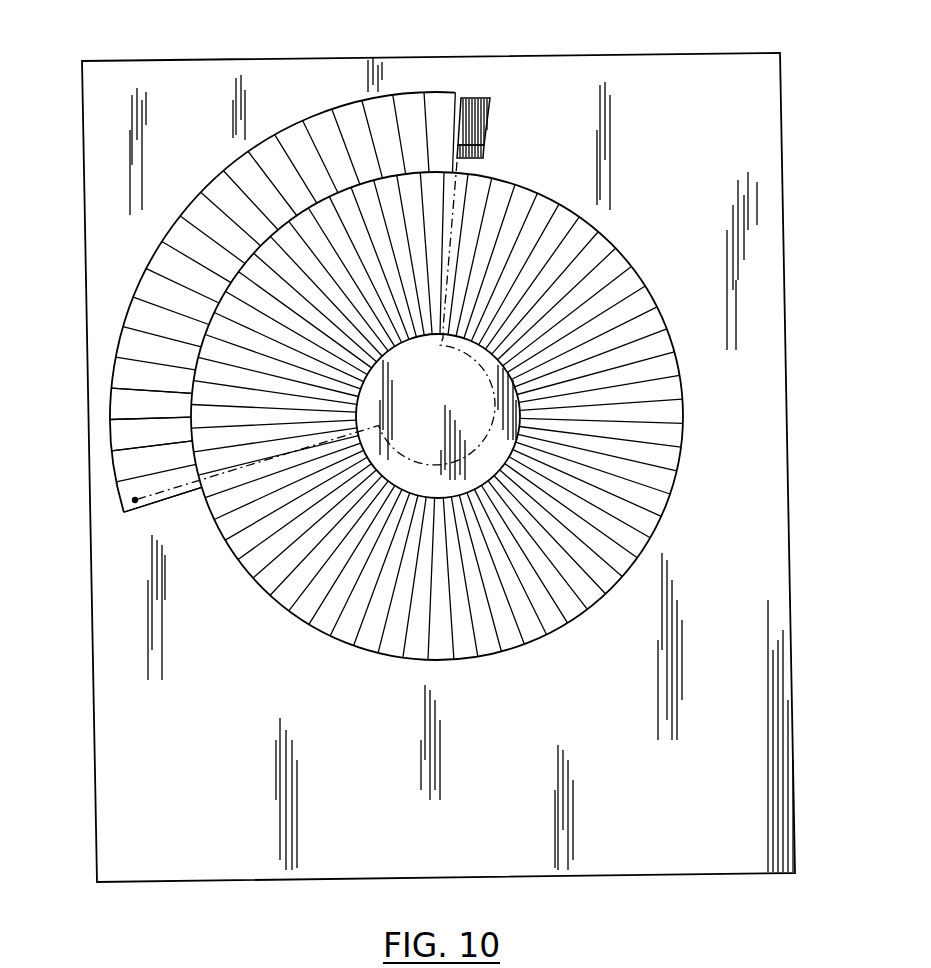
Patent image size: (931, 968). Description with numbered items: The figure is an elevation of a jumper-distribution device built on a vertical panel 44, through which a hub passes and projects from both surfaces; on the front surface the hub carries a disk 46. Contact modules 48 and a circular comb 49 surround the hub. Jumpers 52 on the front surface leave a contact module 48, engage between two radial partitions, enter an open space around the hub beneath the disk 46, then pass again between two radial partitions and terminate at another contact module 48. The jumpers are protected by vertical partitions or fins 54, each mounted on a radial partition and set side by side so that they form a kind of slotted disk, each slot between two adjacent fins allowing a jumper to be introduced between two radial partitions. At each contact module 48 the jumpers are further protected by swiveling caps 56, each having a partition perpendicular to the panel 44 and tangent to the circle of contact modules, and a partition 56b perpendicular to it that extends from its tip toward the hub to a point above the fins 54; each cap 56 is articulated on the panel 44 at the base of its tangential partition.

The vertical panel 44 is at (138, 743).
The disk 46 is at (488, 463).
The contact module 48 is at (488, 122).
The circular comb 49 is at (485, 153).
The jumper 52 is at (158, 505).
The vertical partitions or fins 54 is at (660, 324).
The swiveling cap 56 is at (153, 376).
The partition 56b is at (128, 435).